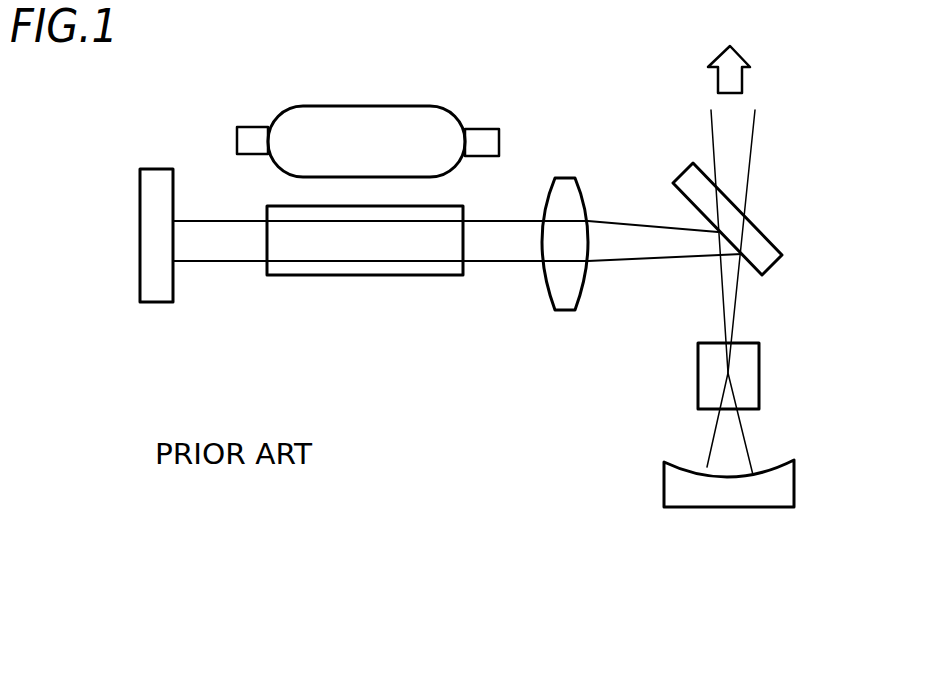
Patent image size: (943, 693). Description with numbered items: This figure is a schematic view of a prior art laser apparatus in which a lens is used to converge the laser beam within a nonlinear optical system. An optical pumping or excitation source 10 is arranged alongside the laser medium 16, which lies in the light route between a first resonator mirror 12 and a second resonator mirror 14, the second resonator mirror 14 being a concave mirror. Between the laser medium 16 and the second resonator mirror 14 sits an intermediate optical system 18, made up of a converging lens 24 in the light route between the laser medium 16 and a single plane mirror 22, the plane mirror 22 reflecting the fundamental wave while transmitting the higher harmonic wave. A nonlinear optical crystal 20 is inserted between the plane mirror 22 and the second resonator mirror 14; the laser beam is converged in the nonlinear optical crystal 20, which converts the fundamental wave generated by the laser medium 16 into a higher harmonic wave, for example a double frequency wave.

The excitation source 10 is at (341, 122).
The first resonator mirror 12 is at (156, 302).
The second resonator mirror 14 is at (794, 482).
The laser medium 16 is at (350, 276).
The intermediate optical system 18 is at (680, 80).
The nonlinear optical crystal 20 is at (759, 363).
The plane mirror 22 is at (690, 175).
The converging lens 24 is at (566, 178).